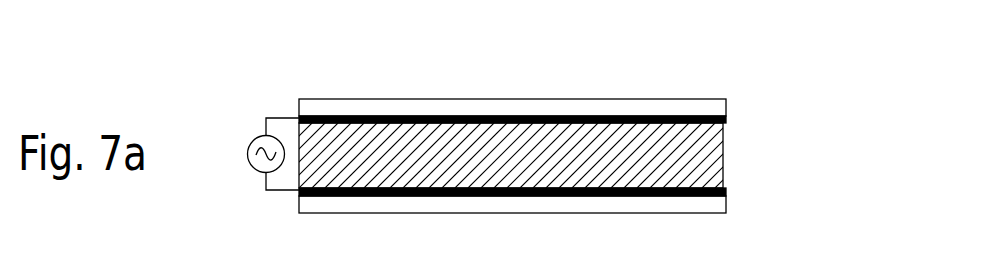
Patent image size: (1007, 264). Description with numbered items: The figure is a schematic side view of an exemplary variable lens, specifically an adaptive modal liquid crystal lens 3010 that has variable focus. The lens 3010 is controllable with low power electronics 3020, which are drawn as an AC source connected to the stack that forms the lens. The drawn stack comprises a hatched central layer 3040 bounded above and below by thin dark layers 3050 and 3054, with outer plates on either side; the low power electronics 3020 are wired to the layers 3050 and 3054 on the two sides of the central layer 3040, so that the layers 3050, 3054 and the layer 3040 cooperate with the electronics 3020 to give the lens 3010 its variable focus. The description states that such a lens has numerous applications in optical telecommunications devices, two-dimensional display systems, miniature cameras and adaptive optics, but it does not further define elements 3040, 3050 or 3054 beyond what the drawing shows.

The adaptive modal liquid crystal lens 3010 is at (375, 86).
The low power electronics 3020 is at (237, 128).
The dielectric elastomer layer 3040 is at (737, 97).
The top electrode 3050 is at (654, 116).
The bottom electrode 3054 is at (710, 197).